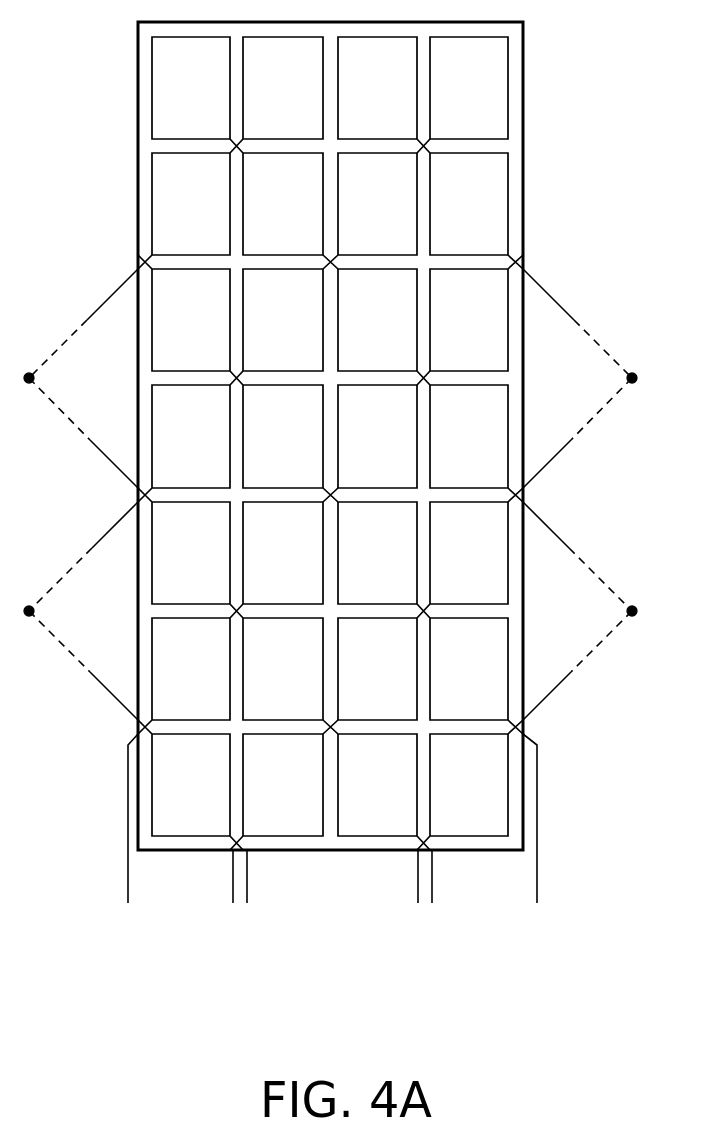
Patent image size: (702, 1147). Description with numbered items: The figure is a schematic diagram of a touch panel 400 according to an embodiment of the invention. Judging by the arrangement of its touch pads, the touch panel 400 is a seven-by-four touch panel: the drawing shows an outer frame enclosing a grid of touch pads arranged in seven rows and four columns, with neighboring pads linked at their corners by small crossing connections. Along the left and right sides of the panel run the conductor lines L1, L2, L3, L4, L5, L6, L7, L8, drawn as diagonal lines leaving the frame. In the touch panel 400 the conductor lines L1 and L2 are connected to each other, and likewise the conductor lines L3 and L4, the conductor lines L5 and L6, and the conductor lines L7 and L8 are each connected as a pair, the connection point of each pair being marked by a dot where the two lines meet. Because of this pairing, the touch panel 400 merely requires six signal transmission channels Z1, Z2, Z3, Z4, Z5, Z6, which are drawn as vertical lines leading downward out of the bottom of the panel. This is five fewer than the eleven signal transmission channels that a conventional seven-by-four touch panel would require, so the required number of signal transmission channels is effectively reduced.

The touch panel 400 is at (662, 1017).
The conductor line L1 is at (81, 326).
The conductor line L2 is at (83, 433).
The conductor line L3 is at (580, 326).
The conductor line L4 is at (577, 433).
The conductor line L5 is at (81, 559).
The conductor line L6 is at (83, 669).
The conductor line L7 is at (580, 559).
The conductor line L8 is at (577, 669).
The signal transmission channel Z1 is at (126, 843).
The signal transmission channel Z2 is at (218, 901).
The signal transmission channel Z3 is at (262, 901).
The signal transmission channel Z4 is at (405, 901).
The signal transmission channel Z5 is at (448, 901).
The signal transmission channel Z6 is at (535, 843).